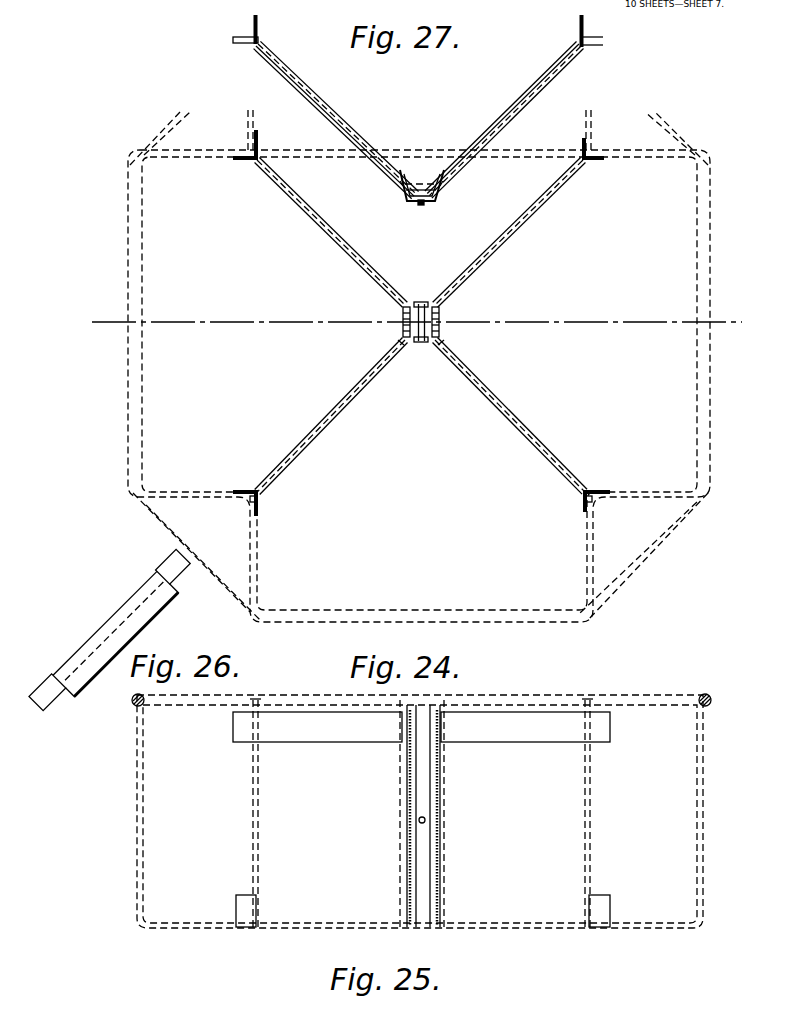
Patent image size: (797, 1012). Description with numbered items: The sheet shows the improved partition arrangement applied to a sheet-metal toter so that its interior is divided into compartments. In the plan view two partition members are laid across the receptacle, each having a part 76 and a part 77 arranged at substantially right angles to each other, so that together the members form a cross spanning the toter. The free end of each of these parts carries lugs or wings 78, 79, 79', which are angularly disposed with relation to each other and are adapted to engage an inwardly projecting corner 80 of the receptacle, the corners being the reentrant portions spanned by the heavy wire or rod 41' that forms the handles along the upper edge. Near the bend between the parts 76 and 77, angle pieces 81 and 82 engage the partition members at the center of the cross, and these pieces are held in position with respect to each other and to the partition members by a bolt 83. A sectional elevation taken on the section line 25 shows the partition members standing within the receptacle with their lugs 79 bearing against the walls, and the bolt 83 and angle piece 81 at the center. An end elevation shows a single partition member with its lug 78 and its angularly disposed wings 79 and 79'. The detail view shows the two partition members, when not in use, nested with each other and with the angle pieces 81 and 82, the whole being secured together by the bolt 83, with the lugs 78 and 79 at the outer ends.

In FIG. 24, the section line 25 is at (411, 326).
In FIG. 24, the heavy wire or rod 41' is at (419, 382).
In FIG. 25, the heavy wire or rod 41' is at (443, 801).
In FIG. 27, the partition member part 76 is at (418, 117).
In FIG. 24, the partition member part 76 is at (420, 232).
In FIG. 27, the partition member part 77 is at (419, 122).
In FIG. 24, the partition member part 77 is at (421, 416).
In FIG. 27, the lug or wing 78 is at (415, 57).
In FIG. 24, the lug or wing 78 is at (442, 316).
In FIG. 26, the lug or wing 78 is at (122, 634).
In FIG. 27, the lug or wing 79 is at (419, 32).
In FIG. 24, the lug or wing 79 is at (413, 349).
In FIG. 26, the lug or wing 79 is at (158, 561).
In FIG. 25, the lug or wing 79 is at (431, 813).
In FIG. 26, the lug or wing 79' is at (50, 677).
In FIG. 24, the inwardly projecting corner 80 is at (422, 518).
In FIG. 27, the angle piece 81 is at (422, 175).
In FIG. 24, the angle piece 81 is at (425, 307).
In FIG. 25, the angle piece 81 is at (442, 813).
In FIG. 27, the angle piece 82 is at (413, 203).
In FIG. 24, the angle piece 82 is at (421, 360).
In FIG. 27, the bolt 83 is at (423, 222).
In FIG. 24, the bolt 83 is at (448, 322).
In FIG. 25, the bolt 83 is at (450, 810).